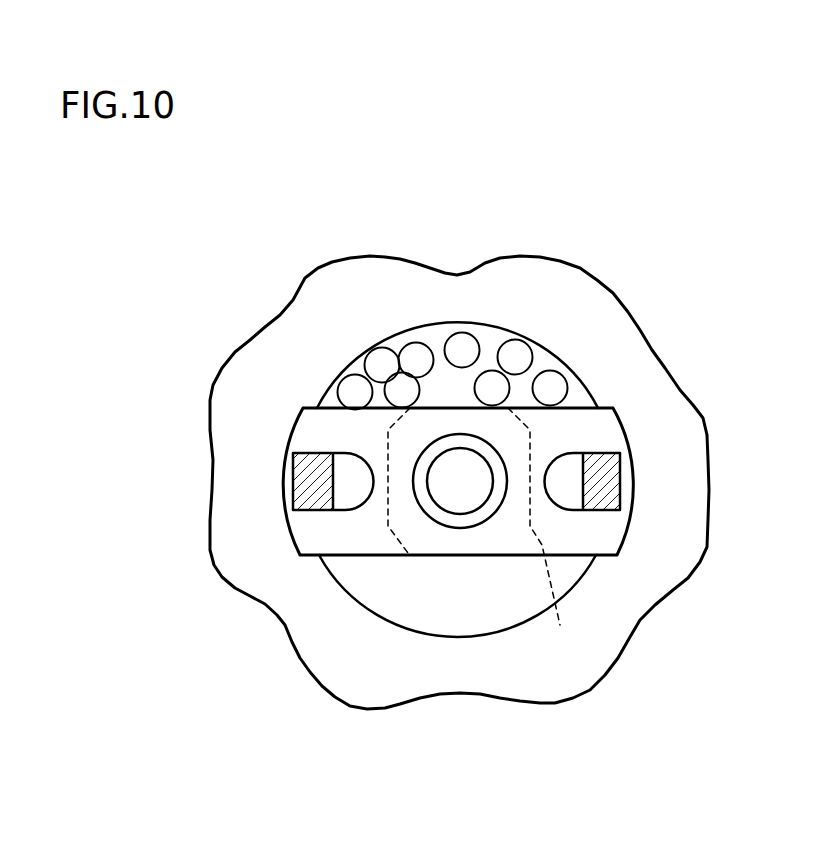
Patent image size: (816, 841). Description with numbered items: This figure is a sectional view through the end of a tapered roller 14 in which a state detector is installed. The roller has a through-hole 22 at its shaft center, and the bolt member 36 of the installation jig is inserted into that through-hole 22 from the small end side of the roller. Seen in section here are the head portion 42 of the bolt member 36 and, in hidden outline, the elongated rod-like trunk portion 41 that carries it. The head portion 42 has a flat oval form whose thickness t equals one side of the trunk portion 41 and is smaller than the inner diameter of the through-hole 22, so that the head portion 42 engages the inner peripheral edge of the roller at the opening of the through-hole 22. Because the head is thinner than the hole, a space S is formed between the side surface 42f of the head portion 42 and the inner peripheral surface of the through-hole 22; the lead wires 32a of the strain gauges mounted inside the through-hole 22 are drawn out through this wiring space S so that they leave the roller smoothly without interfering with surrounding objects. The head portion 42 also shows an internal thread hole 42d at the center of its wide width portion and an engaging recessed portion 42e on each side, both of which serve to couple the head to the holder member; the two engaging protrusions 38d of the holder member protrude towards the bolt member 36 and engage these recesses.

The tapered roller 14 is at (459, 436).
The through-hole 22 is at (463, 637).
The lead wires 32a is at (453, 307).
The bolt member 36 is at (259, 336).
The engaging protrusions 38d is at (458, 473).
The trunk portion 41 is at (488, 533).
The head portion 42 is at (458, 582).
The internal thread hole 42d is at (457, 510).
The engaging recessed portion 42e is at (322, 510).
The side surface 42f is at (431, 497).
The space S is at (623, 355).
The thickness t is at (178, 408).